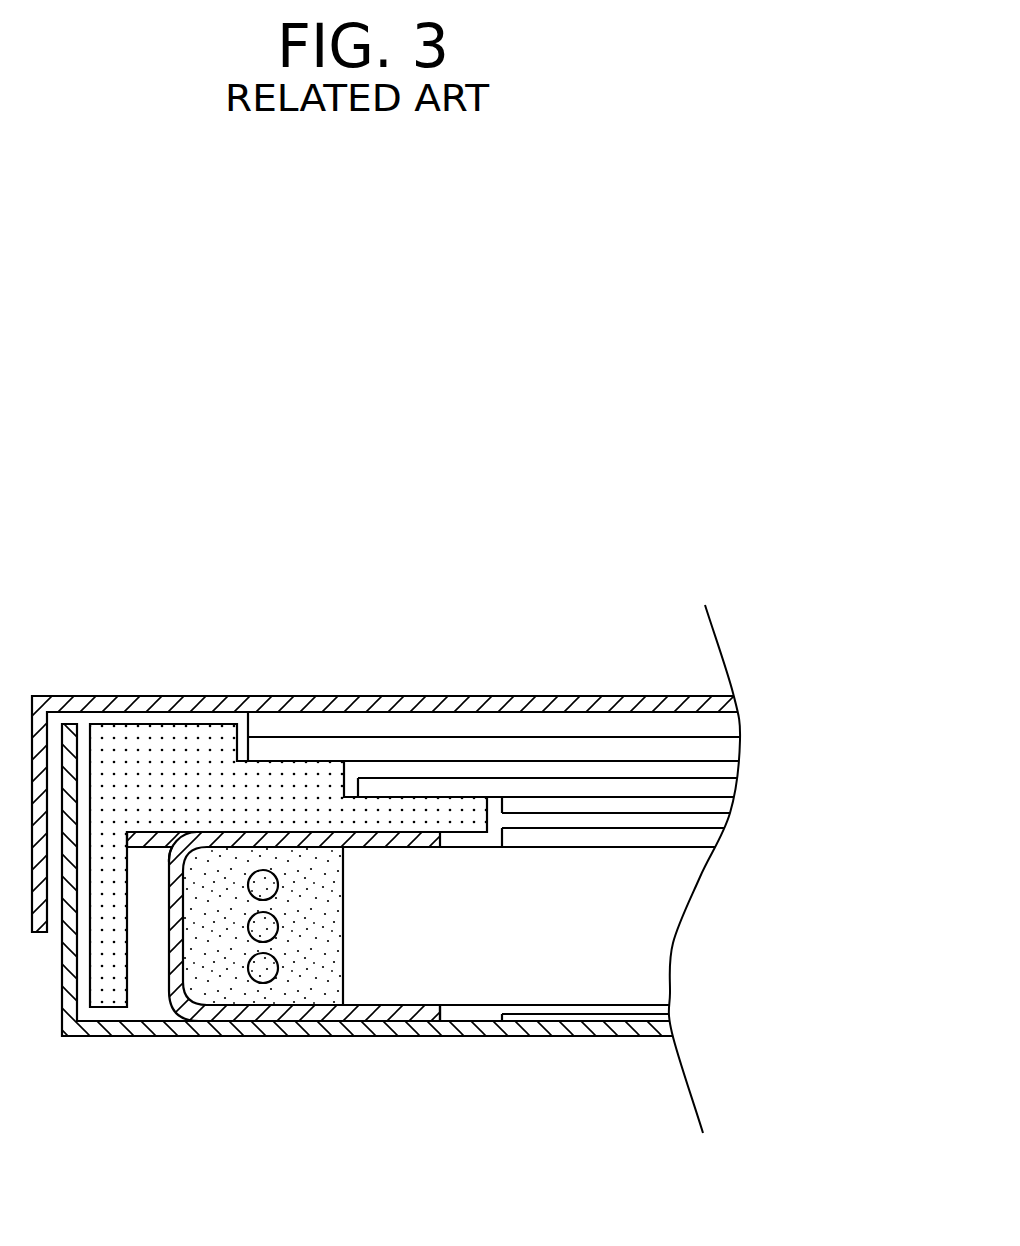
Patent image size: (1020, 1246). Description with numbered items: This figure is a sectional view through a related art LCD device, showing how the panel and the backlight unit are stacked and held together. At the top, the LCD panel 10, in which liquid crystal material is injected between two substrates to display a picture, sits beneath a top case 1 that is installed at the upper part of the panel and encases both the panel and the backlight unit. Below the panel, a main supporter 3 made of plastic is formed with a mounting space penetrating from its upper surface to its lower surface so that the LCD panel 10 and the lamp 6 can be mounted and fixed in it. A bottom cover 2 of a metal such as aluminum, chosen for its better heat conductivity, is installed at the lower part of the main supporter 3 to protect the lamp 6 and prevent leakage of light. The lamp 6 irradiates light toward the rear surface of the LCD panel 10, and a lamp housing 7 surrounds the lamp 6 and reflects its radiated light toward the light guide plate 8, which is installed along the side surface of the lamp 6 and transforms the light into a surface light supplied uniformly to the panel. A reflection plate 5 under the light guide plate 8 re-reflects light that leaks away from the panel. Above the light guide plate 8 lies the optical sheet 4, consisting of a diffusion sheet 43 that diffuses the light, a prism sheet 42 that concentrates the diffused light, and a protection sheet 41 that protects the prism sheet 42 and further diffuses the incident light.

The top case 1 is at (258, 702).
The bottom cover 2 is at (488, 1038).
The main supporter 3 is at (188, 745).
The optical sheet 4 is at (557, 815).
The protection sheet 41 is at (715, 789).
The prism sheet 42 is at (715, 805).
The diffusion sheet 43 is at (713, 840).
The reflection plate 5 is at (668, 1020).
The lamp 6 is at (265, 970).
The lamp housing 7 is at (357, 1012).
The light guide plate 8 is at (655, 947).
The LCD panel 10 is at (532, 732).